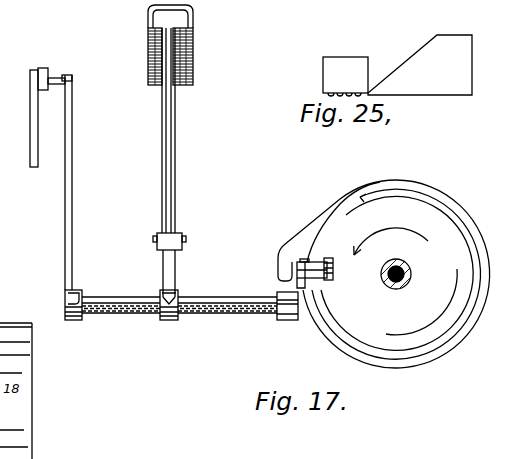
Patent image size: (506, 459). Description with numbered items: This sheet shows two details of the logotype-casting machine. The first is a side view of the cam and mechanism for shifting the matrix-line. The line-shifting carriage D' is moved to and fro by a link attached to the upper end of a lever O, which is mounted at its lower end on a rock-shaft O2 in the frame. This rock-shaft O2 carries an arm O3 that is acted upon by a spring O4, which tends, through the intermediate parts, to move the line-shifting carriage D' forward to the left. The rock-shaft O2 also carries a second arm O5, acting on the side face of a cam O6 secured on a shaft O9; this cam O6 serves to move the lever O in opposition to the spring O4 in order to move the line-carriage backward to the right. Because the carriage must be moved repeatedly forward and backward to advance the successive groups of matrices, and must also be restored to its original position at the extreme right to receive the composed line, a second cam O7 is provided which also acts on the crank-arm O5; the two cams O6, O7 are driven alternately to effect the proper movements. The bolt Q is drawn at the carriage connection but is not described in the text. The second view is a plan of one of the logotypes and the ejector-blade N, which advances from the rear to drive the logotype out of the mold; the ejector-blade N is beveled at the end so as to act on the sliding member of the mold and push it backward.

In FIG. 17, the pivot bolt Q is at (62, 70).
In FIG. 17, the line-shifting carriage D' is at (28, 117).
In FIG. 17, the lever O is at (76, 197).
In FIG. 17, the rock-shaft O2 is at (137, 302).
In FIG. 17, the arm O3 is at (172, 265).
In FIG. 17, the spring O4 is at (173, 172).
In FIG. 17, the second arm O5 is at (296, 288).
In FIG. 17, the cam O6 is at (437, 326).
In FIG. 17, the second cam O7 is at (455, 337).
In FIG. 17, the shaft O9 is at (411, 270).
In FIG. 25, the ejector-blade N is at (420, 65).